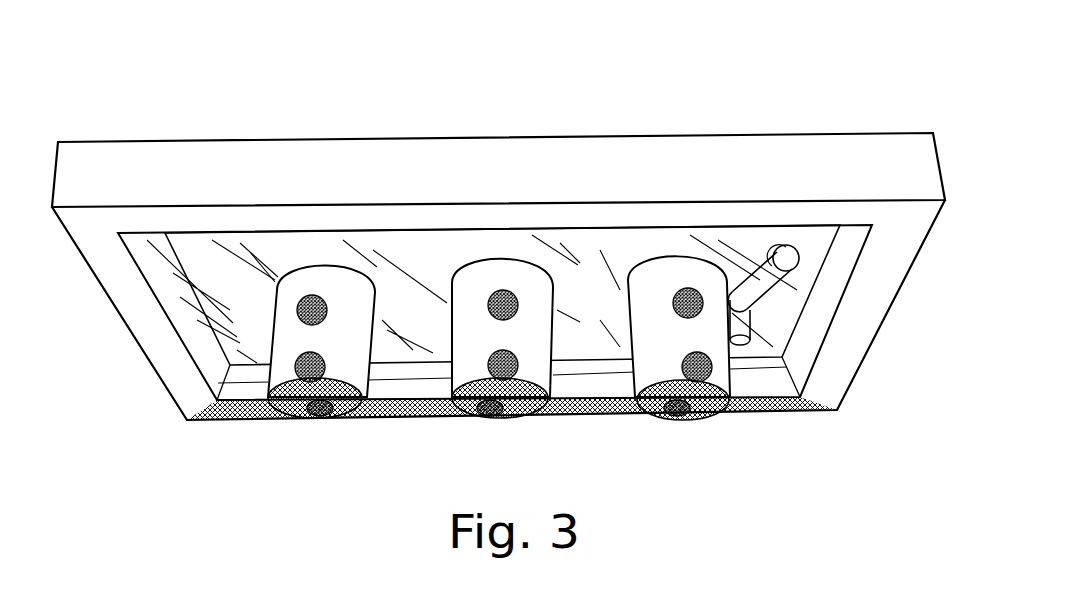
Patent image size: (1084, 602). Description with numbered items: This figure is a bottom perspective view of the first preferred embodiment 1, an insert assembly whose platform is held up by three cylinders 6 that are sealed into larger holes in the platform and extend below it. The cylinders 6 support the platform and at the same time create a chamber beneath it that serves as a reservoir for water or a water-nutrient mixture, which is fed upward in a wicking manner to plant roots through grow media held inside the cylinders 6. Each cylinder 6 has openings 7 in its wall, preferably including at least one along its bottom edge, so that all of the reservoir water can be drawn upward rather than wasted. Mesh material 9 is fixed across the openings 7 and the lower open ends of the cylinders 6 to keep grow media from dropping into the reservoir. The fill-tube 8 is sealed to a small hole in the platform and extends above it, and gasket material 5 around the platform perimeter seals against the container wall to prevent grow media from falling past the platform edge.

The first preferred embodiment 1 is at (276, 115).
The gasket material 5 is at (867, 307).
The cylinders 6 is at (292, 335).
The openings 7 is at (703, 316).
The fill-tube 8 is at (766, 252).
The mesh material 9 is at (442, 417).